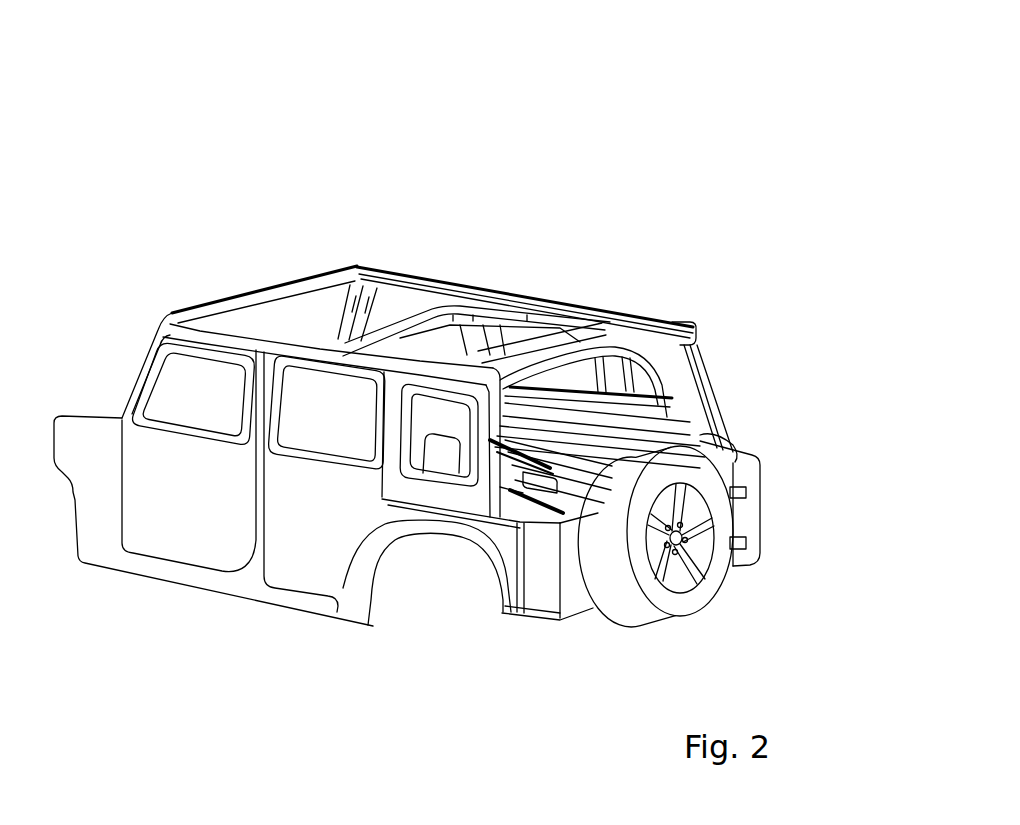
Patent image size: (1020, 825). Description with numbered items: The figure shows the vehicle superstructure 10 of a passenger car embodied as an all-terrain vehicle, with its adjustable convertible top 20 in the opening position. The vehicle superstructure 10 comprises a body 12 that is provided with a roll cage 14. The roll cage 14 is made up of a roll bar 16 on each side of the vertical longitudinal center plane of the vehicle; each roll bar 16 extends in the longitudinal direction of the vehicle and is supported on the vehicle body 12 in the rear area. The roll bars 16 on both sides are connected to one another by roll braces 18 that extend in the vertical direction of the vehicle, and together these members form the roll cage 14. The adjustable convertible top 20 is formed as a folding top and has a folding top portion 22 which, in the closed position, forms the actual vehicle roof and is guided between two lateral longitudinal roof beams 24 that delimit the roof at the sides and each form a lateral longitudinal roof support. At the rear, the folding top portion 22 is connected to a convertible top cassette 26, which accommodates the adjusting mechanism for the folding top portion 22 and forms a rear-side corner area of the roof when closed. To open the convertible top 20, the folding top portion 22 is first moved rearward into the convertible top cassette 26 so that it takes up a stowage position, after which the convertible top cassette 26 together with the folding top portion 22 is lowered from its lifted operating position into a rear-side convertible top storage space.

The vehicle superstructure 10 is at (428, 364).
The body 12 is at (255, 580).
The roll cage 14 is at (429, 292).
The roll bar 16 is at (655, 366).
The roll brace 18 is at (416, 332).
The adjustable convertible top 20 is at (551, 523).
The folding top portion 22 is at (696, 408).
The lateral longitudinal roof beam 24 is at (217, 325).
The convertible top cassette 26 is at (711, 443).